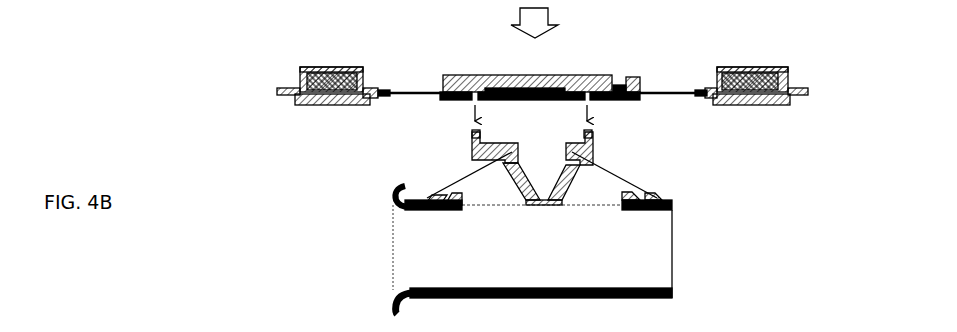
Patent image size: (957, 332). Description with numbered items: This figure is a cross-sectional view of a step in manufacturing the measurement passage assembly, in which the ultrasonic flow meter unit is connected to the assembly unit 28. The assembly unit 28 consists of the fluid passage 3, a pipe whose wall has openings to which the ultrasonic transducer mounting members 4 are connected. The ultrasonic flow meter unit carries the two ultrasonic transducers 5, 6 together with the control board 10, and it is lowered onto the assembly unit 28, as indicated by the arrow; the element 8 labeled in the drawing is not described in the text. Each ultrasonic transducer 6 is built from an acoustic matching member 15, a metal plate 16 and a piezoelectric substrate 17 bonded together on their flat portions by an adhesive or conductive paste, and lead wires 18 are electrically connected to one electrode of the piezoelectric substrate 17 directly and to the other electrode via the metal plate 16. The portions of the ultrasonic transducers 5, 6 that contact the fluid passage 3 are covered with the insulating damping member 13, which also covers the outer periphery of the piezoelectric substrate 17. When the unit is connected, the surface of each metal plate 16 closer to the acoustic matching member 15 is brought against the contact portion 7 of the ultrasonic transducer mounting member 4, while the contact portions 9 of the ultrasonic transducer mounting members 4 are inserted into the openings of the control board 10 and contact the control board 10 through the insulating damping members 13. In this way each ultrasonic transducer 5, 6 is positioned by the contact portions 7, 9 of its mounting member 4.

The fluid passage 3 is at (396, 258).
The ultrasonic transducer mounting member 4 is at (614, 182).
The ultrasonic transducer 5 is at (336, 62).
The ultrasonic transducer 6 is at (745, 62).
The contact portion 7 is at (443, 198).
The base substrate 8 is at (562, 82).
The contact portion 9 is at (587, 138).
The control board 10 is at (468, 92).
The insulating damping member 13 is at (315, 68).
The acoustic matching member 15 is at (340, 100).
The metal plate 16 is at (292, 96).
The piezoelectric substrate 17 is at (318, 82).
The lead wires 18 is at (418, 92).
The assembly unit 28 is at (690, 148).